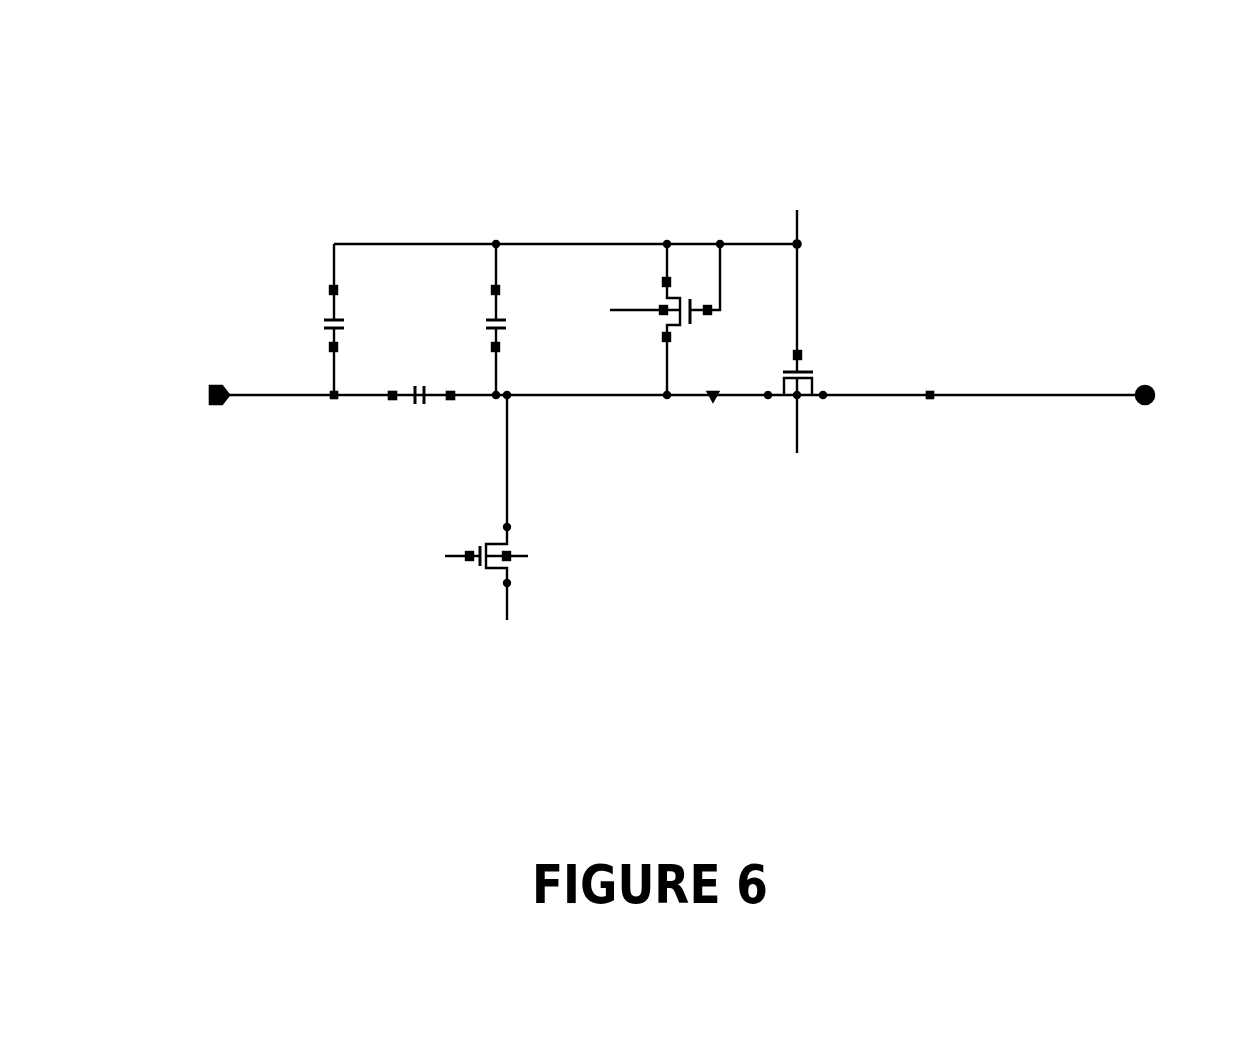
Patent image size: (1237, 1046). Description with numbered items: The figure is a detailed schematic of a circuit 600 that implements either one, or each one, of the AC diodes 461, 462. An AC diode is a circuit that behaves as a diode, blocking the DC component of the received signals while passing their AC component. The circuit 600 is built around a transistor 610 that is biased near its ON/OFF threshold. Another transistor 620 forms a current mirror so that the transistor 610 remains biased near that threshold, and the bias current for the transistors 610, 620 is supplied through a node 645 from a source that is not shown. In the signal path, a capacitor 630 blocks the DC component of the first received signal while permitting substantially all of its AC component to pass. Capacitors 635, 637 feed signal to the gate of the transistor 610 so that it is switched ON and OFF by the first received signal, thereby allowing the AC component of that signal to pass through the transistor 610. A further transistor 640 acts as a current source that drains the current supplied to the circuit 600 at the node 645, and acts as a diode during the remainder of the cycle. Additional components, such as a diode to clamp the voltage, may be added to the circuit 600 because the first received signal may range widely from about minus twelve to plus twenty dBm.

The circuit 600 is at (737, 62).
The AC diode 461 is at (800, 62).
The AC diode 462 is at (862, 62).
The transistor 610 is at (830, 373).
The transistor 620 is at (657, 295).
The capacitor 630 is at (422, 422).
The capacitor 635 is at (314, 296).
The capacitor 637 is at (475, 296).
The transistor 640 is at (525, 570).
The node 645 is at (810, 236).